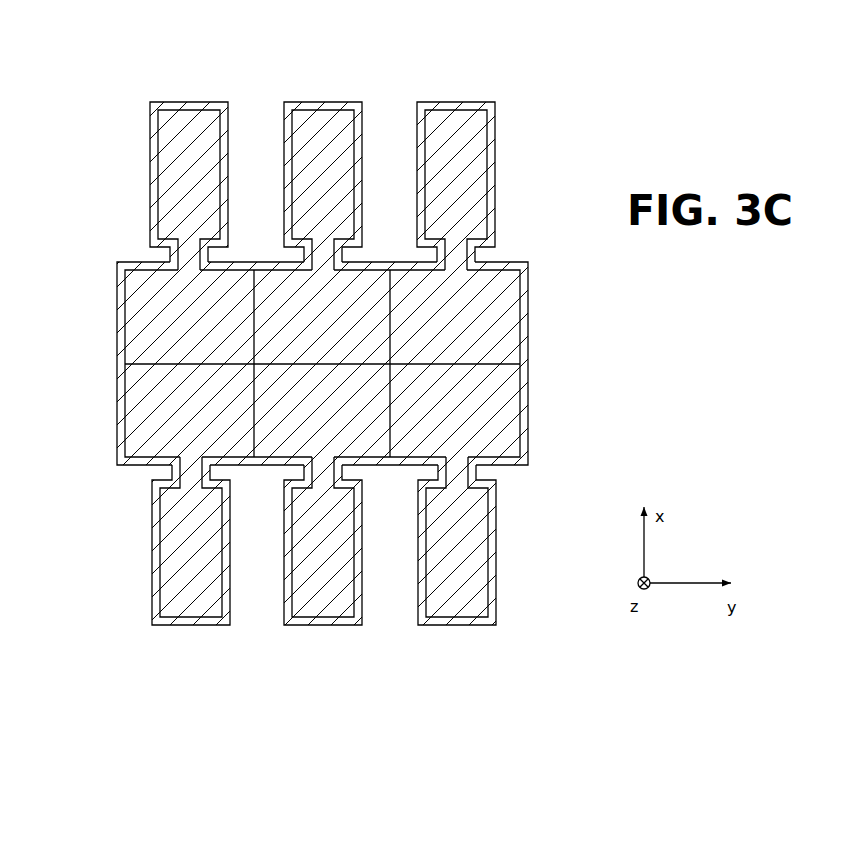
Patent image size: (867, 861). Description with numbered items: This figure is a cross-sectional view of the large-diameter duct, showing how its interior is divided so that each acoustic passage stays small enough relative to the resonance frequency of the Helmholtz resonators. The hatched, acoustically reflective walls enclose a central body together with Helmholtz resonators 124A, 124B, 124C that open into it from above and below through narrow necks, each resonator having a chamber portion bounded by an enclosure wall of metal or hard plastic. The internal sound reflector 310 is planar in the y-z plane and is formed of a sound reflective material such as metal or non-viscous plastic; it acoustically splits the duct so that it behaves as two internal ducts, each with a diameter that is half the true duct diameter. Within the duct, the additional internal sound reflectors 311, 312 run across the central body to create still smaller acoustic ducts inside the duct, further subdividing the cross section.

The Helmholtz resonator 124A is at (148, 123).
The Helmholtz resonator 124B is at (313, 101).
The Helmholtz resonator 124C is at (455, 100).
The internal sound reflector 310 is at (158, 404).
The additional internal sound reflector 311 is at (252, 334).
The additional internal sound reflector 312 is at (393, 411).